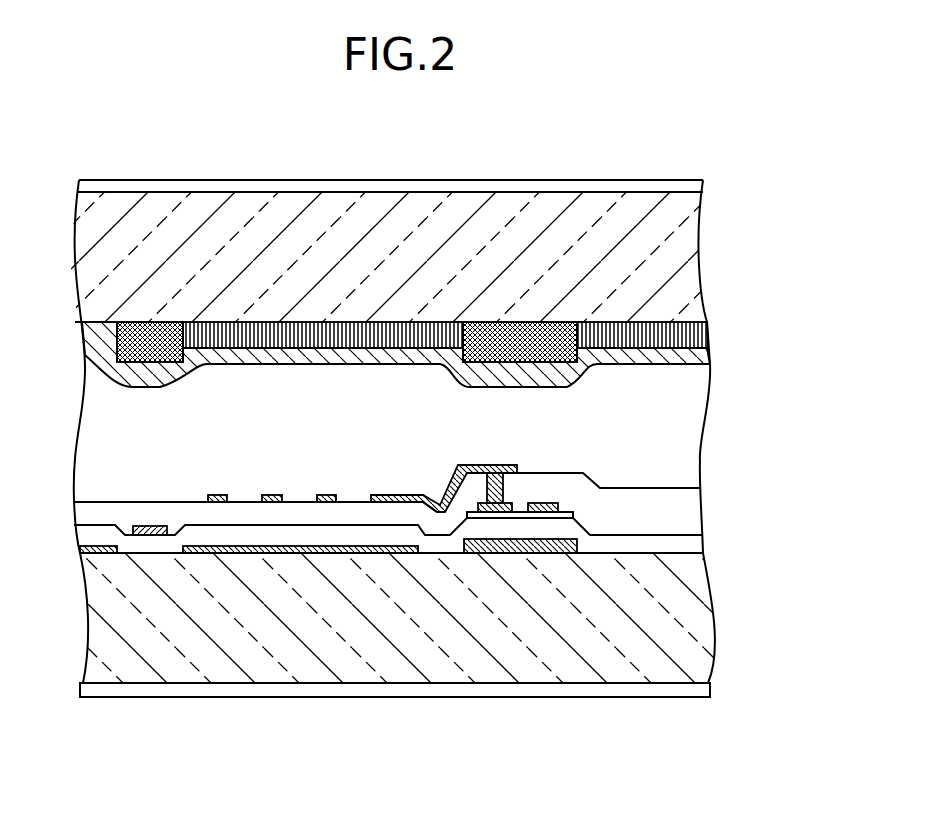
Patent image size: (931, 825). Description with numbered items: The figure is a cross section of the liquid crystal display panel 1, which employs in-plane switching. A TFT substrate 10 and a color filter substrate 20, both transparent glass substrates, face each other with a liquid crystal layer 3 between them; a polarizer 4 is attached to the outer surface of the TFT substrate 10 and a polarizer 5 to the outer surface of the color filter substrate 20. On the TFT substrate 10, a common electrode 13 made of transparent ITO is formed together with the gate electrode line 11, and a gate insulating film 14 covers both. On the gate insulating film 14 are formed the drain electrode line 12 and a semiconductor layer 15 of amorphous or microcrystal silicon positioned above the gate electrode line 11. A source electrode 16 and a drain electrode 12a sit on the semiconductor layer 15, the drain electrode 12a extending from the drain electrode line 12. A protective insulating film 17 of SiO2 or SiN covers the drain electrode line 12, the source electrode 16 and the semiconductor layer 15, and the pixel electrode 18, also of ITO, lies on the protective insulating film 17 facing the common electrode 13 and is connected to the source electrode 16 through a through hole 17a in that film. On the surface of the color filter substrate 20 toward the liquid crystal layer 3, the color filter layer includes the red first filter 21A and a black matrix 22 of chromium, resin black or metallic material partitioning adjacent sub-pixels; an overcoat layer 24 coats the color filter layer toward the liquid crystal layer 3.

The liquid crystal display panel 1 is at (652, 140).
The polarizer 5 is at (692, 187).
The color filter substrate 20 is at (683, 247).
The black matrix 22 is at (148, 340).
The overcoat layer 24 is at (700, 354).
The first filter 21A is at (258, 345).
The liquid crystal layer 3 is at (693, 462).
The protective insulating film 17 is at (682, 515).
The gate insulating film 14 is at (688, 539).
The TFT substrate 10 is at (702, 618).
The polarizer 4 is at (695, 690).
The common electrode 13 is at (293, 550).
The drain electrode line 12 is at (150, 535).
The gate electrode line 11 is at (516, 545).
The semiconductor layer 15 is at (519, 513).
The source electrode 16 is at (495, 507).
The drain electrode 12a is at (545, 510).
The through hole 17a is at (494, 480).
The pixel electrode 18 is at (392, 496).